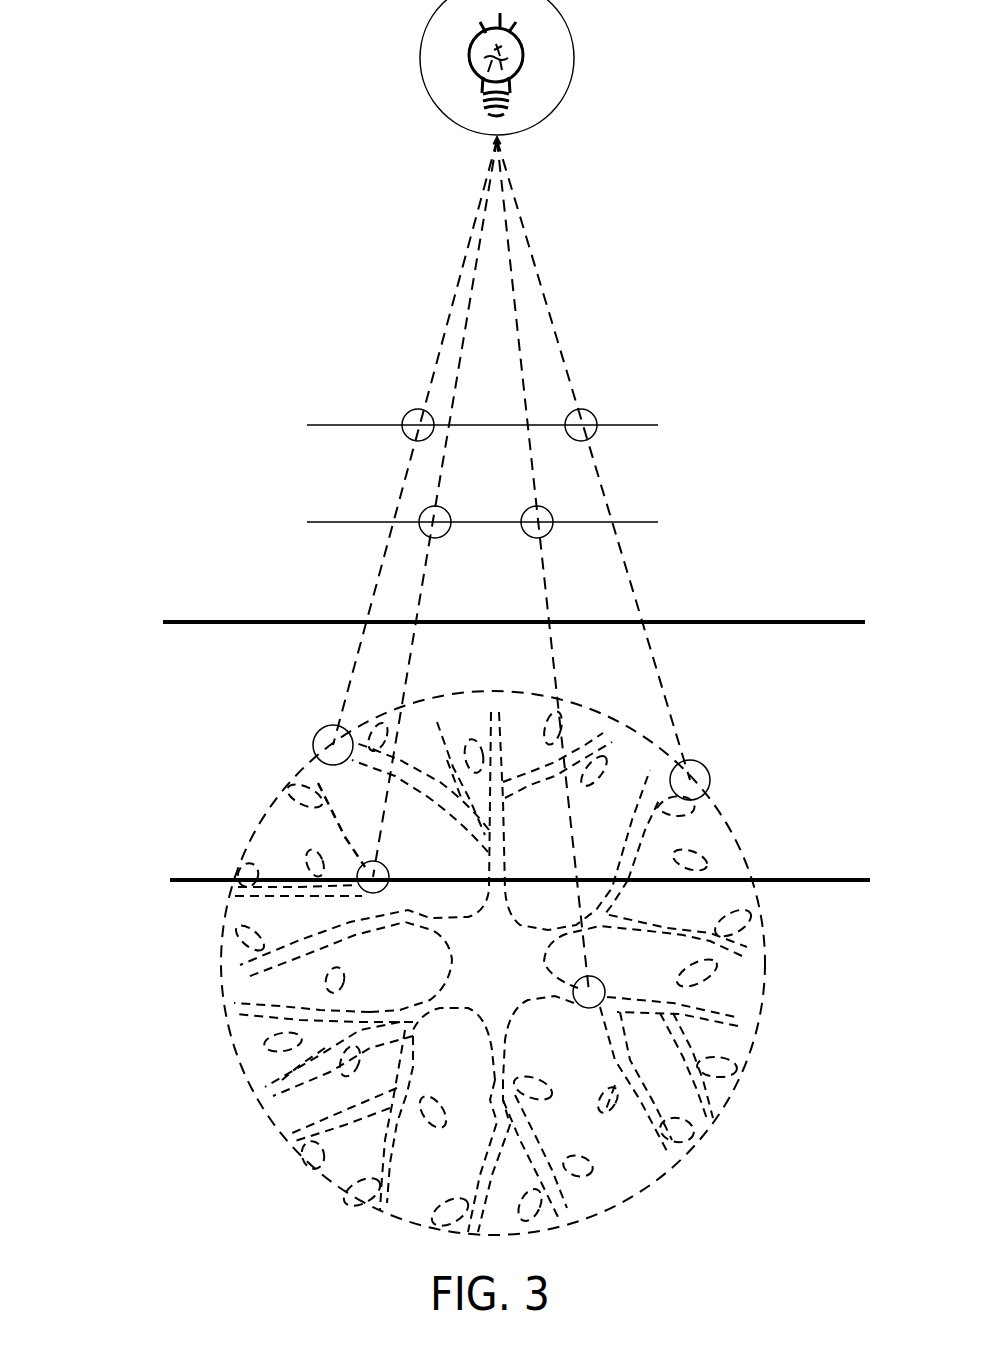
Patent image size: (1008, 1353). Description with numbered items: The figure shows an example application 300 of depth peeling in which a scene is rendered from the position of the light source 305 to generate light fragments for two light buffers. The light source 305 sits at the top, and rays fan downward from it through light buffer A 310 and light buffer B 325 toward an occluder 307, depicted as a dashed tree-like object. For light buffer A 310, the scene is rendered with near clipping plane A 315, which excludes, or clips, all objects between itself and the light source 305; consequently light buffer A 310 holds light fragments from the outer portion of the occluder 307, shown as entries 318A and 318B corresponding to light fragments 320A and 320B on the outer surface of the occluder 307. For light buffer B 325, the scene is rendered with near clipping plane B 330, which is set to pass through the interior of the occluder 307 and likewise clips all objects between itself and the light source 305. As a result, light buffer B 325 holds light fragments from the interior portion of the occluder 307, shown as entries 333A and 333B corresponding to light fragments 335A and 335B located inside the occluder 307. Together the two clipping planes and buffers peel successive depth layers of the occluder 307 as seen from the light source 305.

The example application of depth peeling 300 is at (455, 617).
The light source 305 is at (575, 58).
The occluder 307 is at (330, 1182).
The light buffer A 310 is at (366, 421).
The near clipping plane A 315 is at (455, 615).
The entry 318A is at (418, 425).
The entry 318B is at (581, 425).
The light fragment 320A is at (333, 745).
The light fragment 320B is at (690, 780).
The light buffer B 325 is at (366, 517).
The near clipping plane B 330 is at (455, 875).
The entry 333A is at (435, 522).
The entry 333B is at (537, 522).
The light fragment 335A is at (360, 888).
The light fragment 335B is at (605, 990).